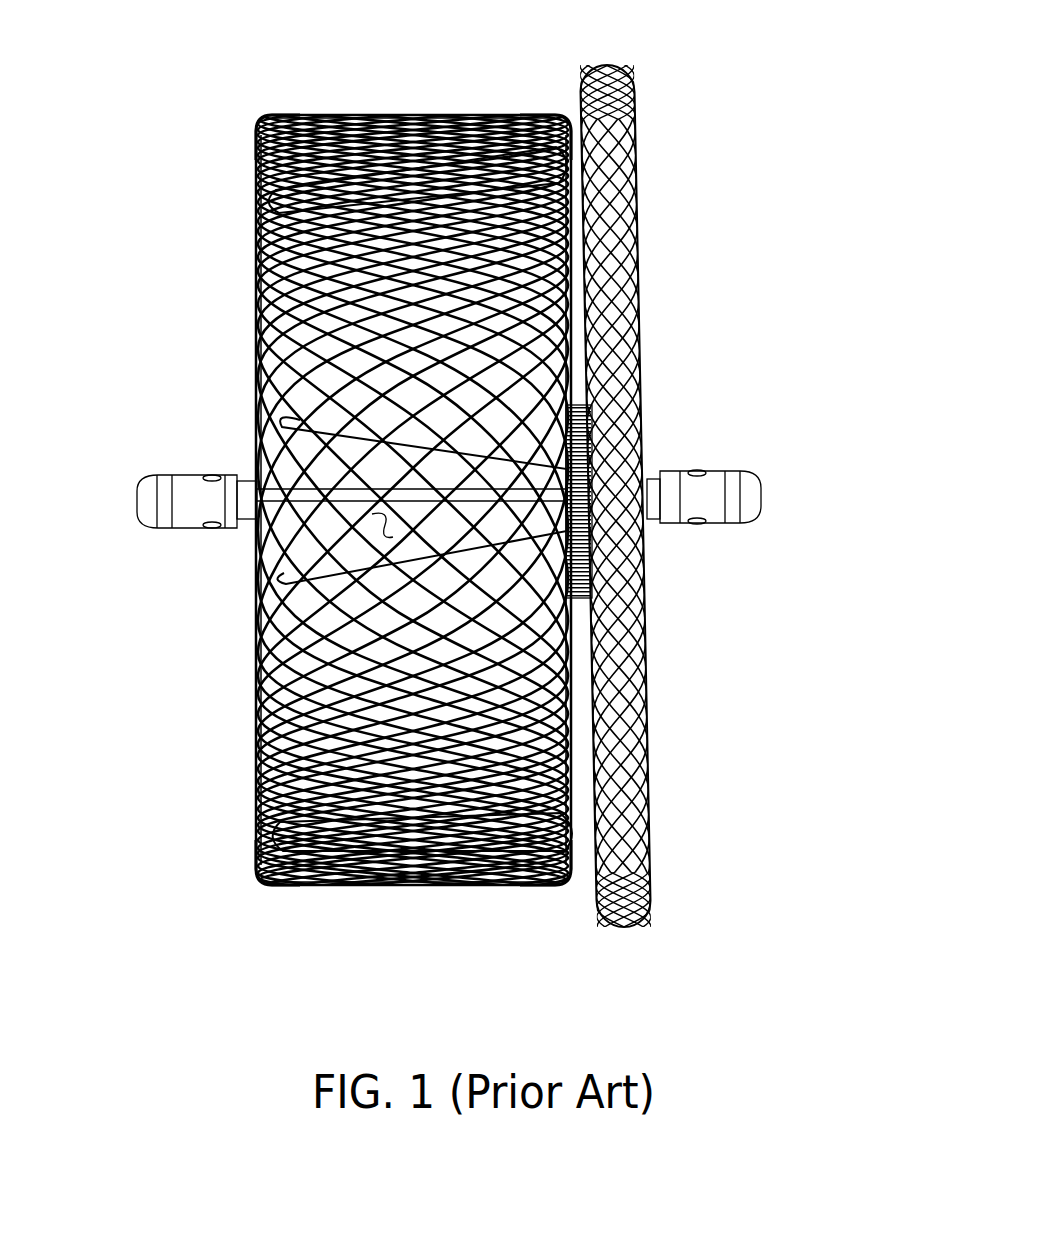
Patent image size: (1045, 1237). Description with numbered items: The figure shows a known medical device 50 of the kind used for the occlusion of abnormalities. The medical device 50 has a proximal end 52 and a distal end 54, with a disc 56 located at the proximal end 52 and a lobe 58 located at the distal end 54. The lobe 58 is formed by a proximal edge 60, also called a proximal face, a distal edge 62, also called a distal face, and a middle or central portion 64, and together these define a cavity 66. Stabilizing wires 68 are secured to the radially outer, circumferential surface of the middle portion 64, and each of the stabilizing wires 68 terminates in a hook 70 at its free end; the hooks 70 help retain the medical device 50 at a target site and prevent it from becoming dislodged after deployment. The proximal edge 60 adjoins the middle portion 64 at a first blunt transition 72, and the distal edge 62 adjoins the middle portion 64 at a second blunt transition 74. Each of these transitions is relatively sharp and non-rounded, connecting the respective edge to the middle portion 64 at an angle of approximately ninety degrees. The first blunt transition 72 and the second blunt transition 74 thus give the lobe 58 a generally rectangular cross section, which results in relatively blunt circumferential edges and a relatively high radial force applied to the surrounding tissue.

The medical device 50 is at (487, 618).
The proximal end 52 is at (706, 618).
The distal end 54 is at (330, 492).
The disc 56 is at (645, 255).
The lobe 58 is at (262, 356).
The proximal edge 60 is at (573, 774).
The distal edge 62 is at (260, 663).
The middle portion 64 is at (400, 113).
The cavity 66 is at (264, 560).
The stabilizing wires 68 is at (372, 872).
The hook 70 is at (262, 805).
The first blunt transition 72 is at (535, 113).
The second blunt transition 74 is at (253, 118).